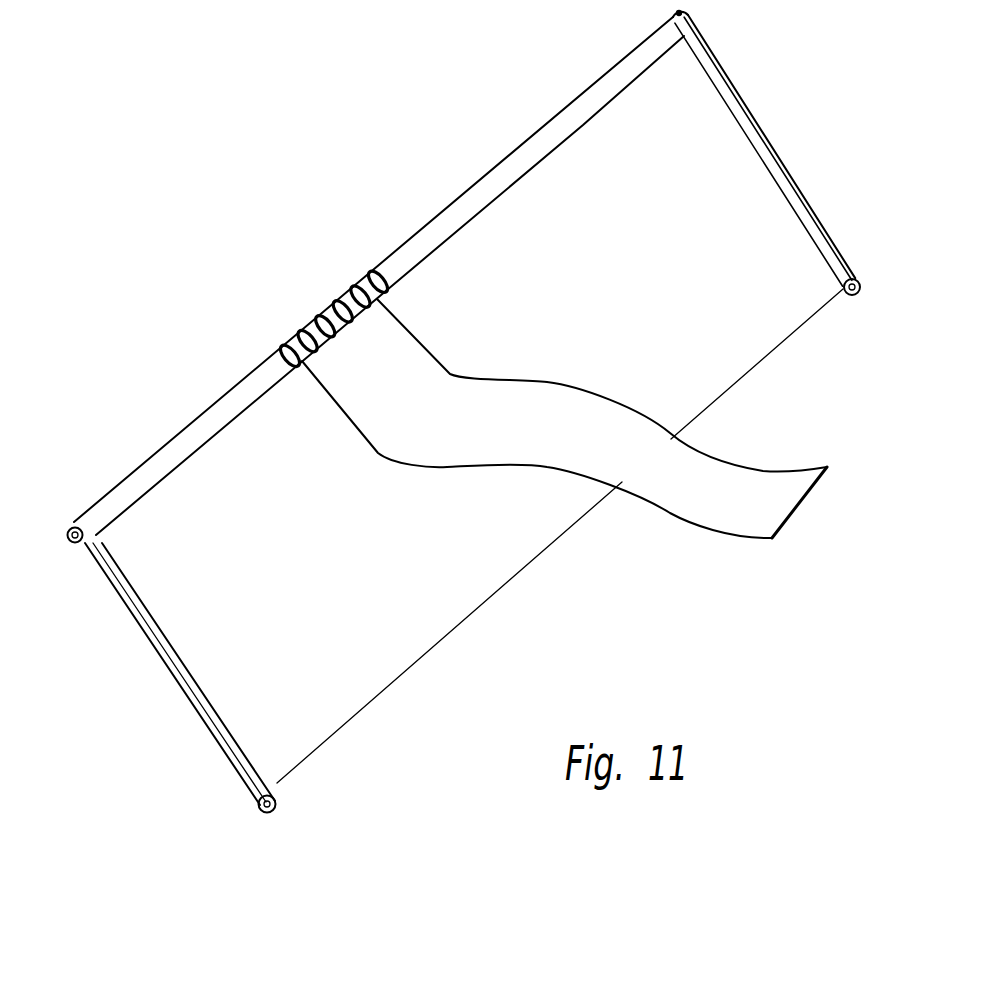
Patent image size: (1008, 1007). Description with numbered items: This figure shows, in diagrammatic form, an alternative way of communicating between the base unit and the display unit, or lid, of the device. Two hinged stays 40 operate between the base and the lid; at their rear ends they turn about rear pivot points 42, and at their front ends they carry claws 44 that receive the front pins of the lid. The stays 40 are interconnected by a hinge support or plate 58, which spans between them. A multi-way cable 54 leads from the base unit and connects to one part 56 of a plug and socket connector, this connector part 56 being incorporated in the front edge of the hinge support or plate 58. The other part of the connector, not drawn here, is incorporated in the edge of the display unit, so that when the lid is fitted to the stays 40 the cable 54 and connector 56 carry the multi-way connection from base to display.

The hinged stays 40 is at (187, 705).
The rear pivot points 42 is at (847, 298).
The claws 44 is at (667, 12).
The multi-way cable 54 is at (758, 543).
The multi-way connector 56 is at (325, 296).
The hinge support or plate 58 is at (309, 556).